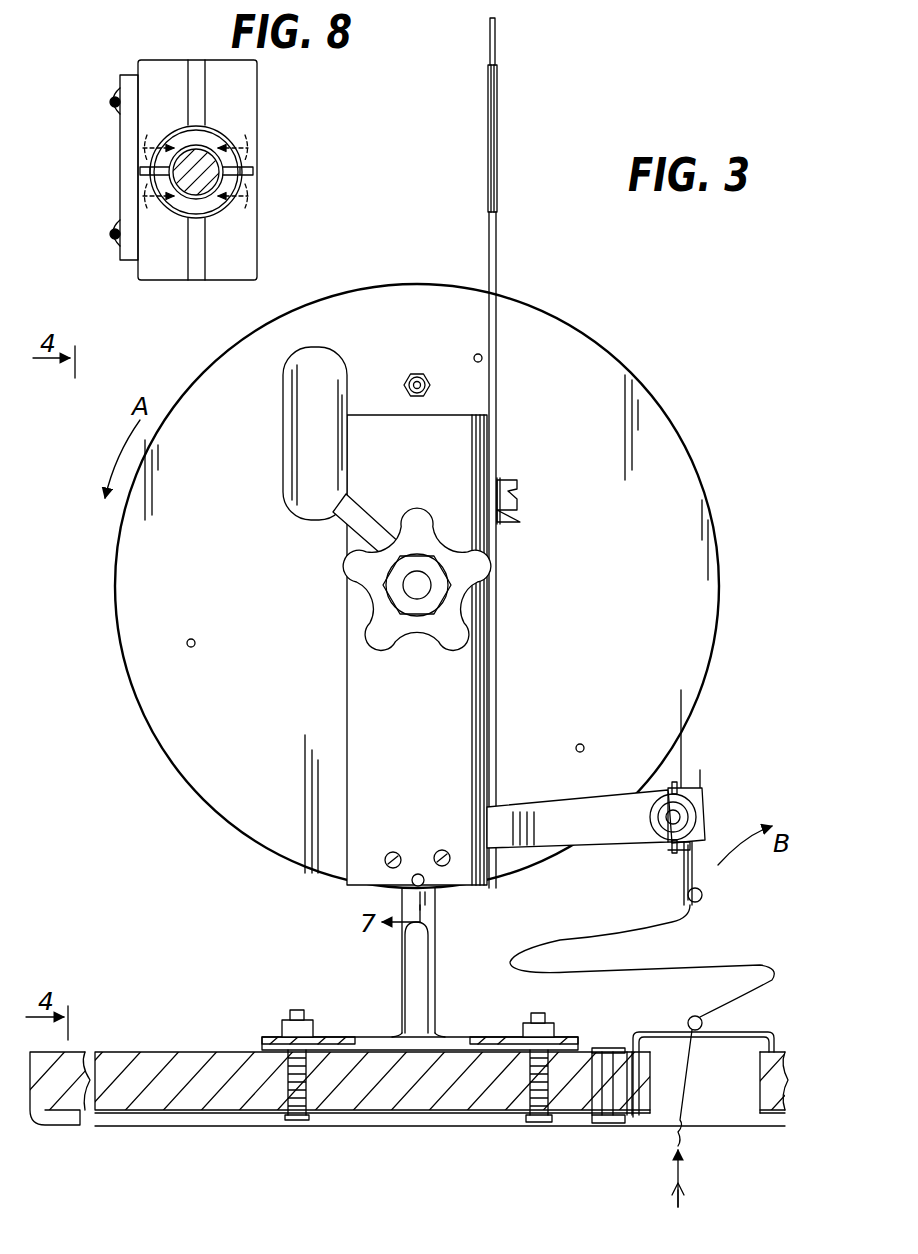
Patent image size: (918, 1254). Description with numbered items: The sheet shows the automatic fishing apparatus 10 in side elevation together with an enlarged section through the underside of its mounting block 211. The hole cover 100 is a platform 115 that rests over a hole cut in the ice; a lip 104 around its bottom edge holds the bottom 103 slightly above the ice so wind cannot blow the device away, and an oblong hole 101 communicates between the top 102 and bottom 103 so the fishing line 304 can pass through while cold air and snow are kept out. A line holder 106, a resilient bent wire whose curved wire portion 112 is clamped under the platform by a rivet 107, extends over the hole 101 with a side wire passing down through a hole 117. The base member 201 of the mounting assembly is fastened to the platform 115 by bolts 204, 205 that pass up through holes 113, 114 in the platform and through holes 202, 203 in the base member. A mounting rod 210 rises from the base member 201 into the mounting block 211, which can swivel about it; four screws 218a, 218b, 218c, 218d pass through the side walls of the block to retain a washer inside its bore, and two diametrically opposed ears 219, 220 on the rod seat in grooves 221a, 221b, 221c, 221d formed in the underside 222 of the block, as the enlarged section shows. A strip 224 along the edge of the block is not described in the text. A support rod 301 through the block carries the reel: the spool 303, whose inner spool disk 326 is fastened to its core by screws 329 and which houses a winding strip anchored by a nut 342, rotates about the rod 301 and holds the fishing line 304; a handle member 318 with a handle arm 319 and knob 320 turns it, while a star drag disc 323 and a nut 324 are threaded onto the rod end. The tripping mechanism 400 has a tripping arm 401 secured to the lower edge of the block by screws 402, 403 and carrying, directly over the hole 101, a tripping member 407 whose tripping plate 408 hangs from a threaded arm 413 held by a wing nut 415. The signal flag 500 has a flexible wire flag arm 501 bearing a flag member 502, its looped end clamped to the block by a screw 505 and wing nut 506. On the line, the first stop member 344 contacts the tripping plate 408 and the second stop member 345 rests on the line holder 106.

In FIG. 3, the fishing apparatus 10 is at (672, 362).
In FIG. 3, the hole cover 100 is at (140, 1100).
In FIG. 3, the hole 101 is at (735, 1100).
In FIG. 3, the top 102 is at (182, 1050).
In FIG. 3, the bottom 103 is at (212, 1118).
In FIG. 3, the lip 104 is at (50, 1125).
In FIG. 3, the line holder 106 is at (722, 1022).
In FIG. 3, the rivet 107 is at (607, 1047).
In FIG. 3, the curved wire portion 112 is at (590, 1098).
In FIG. 3, the hole 113 is at (515, 1120).
In FIG. 3, the hole 114 is at (285, 1102).
In FIG. 3, the platform 115 is at (445, 1098).
In FIG. 3, the hole 117 is at (630, 1122).
In FIG. 3, the base member 201 is at (412, 1035).
In FIG. 3, the hole 202 is at (525, 1036).
In FIG. 3, the hole 203 is at (308, 1036).
In FIG. 3, the bolt 204 is at (540, 1125).
In FIG. 3, the bolt 205 is at (303, 1122).
In FIG. 8, the mounting rod 210 is at (200, 188).
In FIG. 3, the mounting rod 210 is at (402, 972).
In FIG. 8, the mounting block 211 is at (160, 265).
In FIG. 3, the mounting block 211 is at (346, 670).
In FIG. 8, the screw 218a is at (252, 128).
In FIG. 3, the screw 218a is at (442, 849).
In FIG. 8, the screw 218b is at (255, 206).
In FIG. 3, the screw 218b is at (408, 838).
In FIG. 8, the screw 218c is at (140, 208).
In FIG. 8, the screw 218d is at (140, 130).
In FIG. 8, the ear 219 is at (235, 176).
In FIG. 3, the ear 219 is at (410, 882).
In FIG. 8, the ear 220 is at (170, 195).
In FIG. 8, the groove 221a is at (198, 62).
In FIG. 8, the groove 221b is at (253, 171).
In FIG. 8, the groove 221c is at (197, 281).
In FIG. 8, the groove 221d is at (140, 170).
In FIG. 8, the underside 222 is at (245, 80).
In FIG. 3, the underside 222 is at (448, 888).
In FIG. 3, the blade guide strip 224 is at (455, 680).
In FIG. 3, the support rod 301 is at (410, 586).
In FIG. 3, the spool 303 is at (660, 470).
In FIG. 3, the fishing line 304 is at (612, 938).
In FIG. 3, the handle member 318 is at (280, 408).
In FIG. 3, the handle arm 319 is at (384, 535).
In FIG. 3, the knob 320 is at (286, 452).
In FIG. 3, the star drag disc 323 is at (468, 568).
In FIG. 3, the nut 324 is at (437, 598).
In FIG. 3, the inner spool disk 326 is at (645, 405).
In FIG. 3, the screws 329 is at (478, 354).
In FIG. 3, the nut 342 is at (417, 373).
In FIG. 3, the first stop member 344 is at (688, 893).
In FIG. 3, the second stop member 345 is at (695, 1016).
In FIG. 3, the tripping mechanism 400 is at (518, 792).
In FIG. 8, the tripping arm 401 is at (120, 78).
In FIG. 3, the tripping arm 401 is at (615, 776).
In FIG. 8, the screw 402 is at (116, 246).
In FIG. 8, the screw 403 is at (116, 98).
In FIG. 3, the tripping member 407 is at (716, 785).
In FIG. 3, the tripping plate 408 is at (695, 858).
In FIG. 3, the threaded arm 413 is at (682, 816).
In FIG. 3, the wing nut 415 is at (668, 853).
In FIG. 3, the signal flag 500 is at (528, 212).
In FIG. 3, the flag arm 501 is at (489, 235).
In FIG. 3, the flag member 502 is at (497, 118).
In FIG. 3, the screw 505 is at (519, 504).
In FIG. 3, the wing nut 506 is at (520, 482).